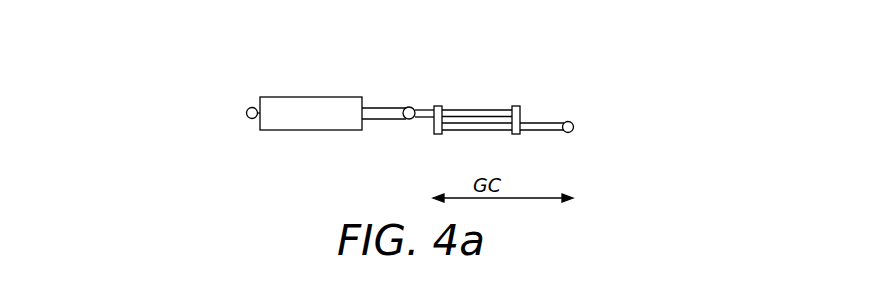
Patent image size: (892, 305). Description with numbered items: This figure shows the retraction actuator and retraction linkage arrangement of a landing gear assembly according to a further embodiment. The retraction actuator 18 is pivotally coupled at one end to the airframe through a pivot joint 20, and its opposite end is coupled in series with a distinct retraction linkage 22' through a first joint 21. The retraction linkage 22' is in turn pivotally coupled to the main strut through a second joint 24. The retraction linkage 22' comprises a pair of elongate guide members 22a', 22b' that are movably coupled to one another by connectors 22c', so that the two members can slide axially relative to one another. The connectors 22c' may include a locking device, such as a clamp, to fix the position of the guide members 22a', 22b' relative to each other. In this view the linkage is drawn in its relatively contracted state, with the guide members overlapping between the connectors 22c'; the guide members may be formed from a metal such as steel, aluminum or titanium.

The retraction actuator 18 is at (313, 97).
The pivot joint 20 is at (246, 113).
The first joint 21 is at (409, 107).
The retraction linkage 22' is at (501, 105).
The elongate guide member 22a' is at (463, 86).
The elongate guide member 22b' is at (503, 156).
The connectors 22c' is at (502, 132).
The second joint 24 is at (574, 127).